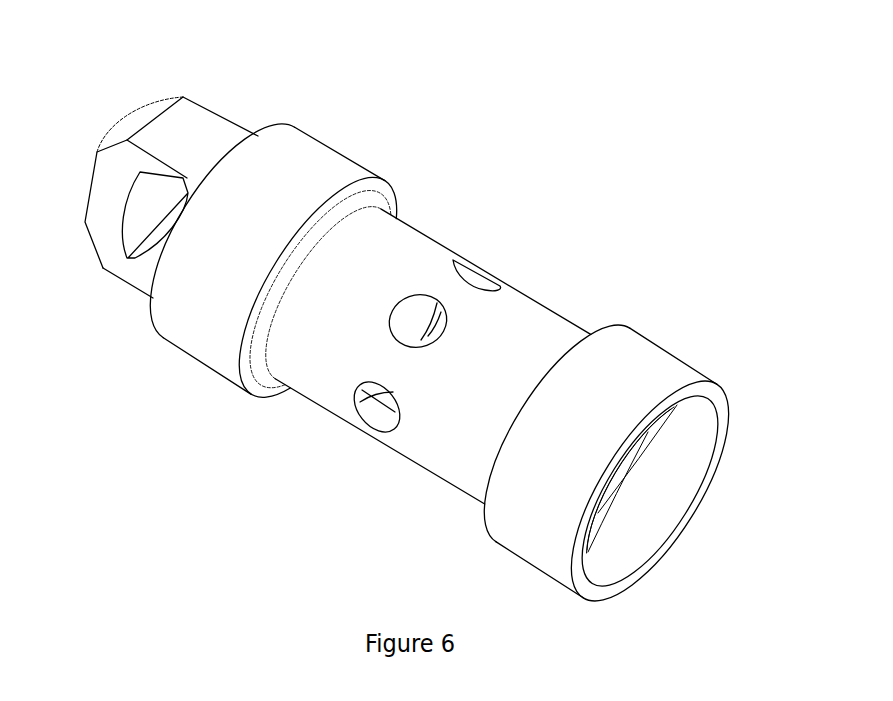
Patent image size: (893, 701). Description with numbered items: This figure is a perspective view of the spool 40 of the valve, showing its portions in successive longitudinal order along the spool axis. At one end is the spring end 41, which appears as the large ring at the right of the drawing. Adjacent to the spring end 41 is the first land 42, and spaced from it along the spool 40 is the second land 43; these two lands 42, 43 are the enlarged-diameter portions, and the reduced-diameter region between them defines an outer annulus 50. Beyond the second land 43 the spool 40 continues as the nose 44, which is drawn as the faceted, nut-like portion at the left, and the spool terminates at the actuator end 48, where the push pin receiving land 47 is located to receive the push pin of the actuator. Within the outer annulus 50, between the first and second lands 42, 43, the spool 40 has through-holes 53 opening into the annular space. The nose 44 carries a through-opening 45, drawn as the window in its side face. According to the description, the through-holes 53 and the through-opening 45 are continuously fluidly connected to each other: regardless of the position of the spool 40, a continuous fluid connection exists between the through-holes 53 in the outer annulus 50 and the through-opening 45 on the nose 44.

The spool 40 is at (424, 322).
The spring end 41 is at (717, 393).
The first land 42 is at (643, 460).
The second land 43 is at (337, 162).
The nose 44 is at (163, 178).
The through-opening 45 is at (156, 258).
The push pin receiving land 47 is at (93, 182).
The actuator end 48 is at (131, 120).
The outer annulus 50 is at (422, 353).
The through-holes 53 is at (477, 272).